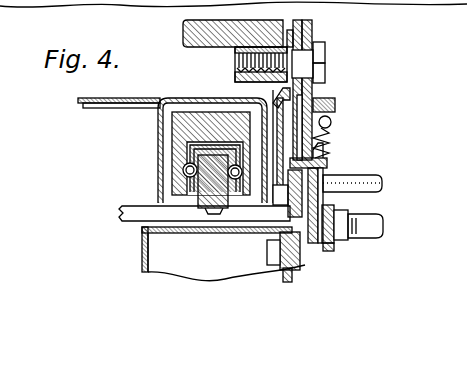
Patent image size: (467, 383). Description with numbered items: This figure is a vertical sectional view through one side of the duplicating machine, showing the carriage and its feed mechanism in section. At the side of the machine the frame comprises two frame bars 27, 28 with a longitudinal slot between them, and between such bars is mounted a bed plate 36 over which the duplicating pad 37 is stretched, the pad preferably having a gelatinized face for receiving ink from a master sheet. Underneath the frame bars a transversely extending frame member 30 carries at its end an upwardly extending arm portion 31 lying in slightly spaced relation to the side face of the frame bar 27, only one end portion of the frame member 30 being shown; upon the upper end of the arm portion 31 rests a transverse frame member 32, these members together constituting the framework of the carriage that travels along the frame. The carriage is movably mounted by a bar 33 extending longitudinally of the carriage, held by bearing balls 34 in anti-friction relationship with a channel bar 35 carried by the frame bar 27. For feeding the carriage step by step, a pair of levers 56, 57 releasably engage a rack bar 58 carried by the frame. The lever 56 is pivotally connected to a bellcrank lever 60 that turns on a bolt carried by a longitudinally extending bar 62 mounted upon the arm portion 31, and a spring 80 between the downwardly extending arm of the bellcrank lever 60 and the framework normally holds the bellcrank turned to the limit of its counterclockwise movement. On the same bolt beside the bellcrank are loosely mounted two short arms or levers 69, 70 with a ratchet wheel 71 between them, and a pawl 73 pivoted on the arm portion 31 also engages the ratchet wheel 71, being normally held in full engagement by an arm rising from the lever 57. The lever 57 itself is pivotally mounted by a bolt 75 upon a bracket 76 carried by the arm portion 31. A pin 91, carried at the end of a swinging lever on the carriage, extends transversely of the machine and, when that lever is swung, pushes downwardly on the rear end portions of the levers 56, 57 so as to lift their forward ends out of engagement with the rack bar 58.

The frame bar 27 is at (185, 105).
The frame bar 28 is at (142, 263).
The frame member 30 is at (130, 208).
The arm portion 31 is at (292, 93).
The transverse frame member 32 is at (183, 31).
The bar 33 is at (200, 210).
The bearing balls 34 is at (183, 167).
The channel bar 35 is at (158, 118).
The bed plate 36 is at (85, 108).
The duplicating pad 37 is at (90, 98).
The lever 56 is at (263, 212).
The lever 57 is at (315, 246).
The rack bar 58 is at (291, 270).
The bellcrank lever 60 is at (277, 100).
The longitudinally extending bar 62 is at (237, 50).
The arm or lever 69 is at (298, 22).
The arm or lever 70 is at (304, 26).
The ratchet wheel 71 is at (310, 36).
The pawl 73 is at (332, 123).
The bolt 75 is at (348, 227).
The bracket 76 is at (325, 176).
The spring 80 is at (326, 100).
The pin 91 is at (372, 183).